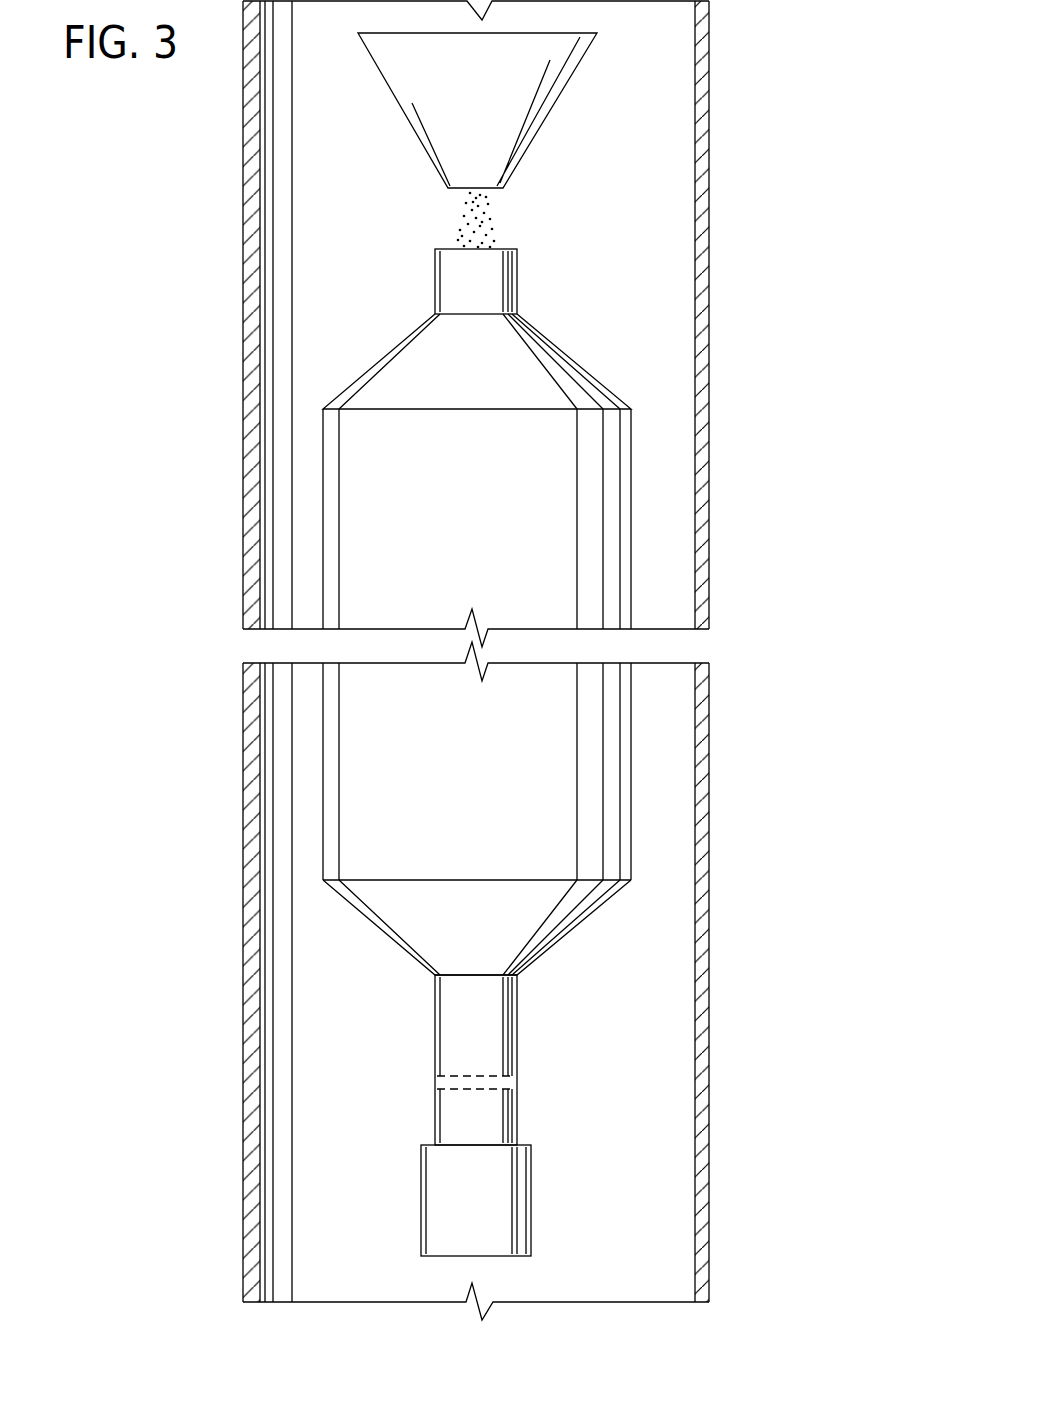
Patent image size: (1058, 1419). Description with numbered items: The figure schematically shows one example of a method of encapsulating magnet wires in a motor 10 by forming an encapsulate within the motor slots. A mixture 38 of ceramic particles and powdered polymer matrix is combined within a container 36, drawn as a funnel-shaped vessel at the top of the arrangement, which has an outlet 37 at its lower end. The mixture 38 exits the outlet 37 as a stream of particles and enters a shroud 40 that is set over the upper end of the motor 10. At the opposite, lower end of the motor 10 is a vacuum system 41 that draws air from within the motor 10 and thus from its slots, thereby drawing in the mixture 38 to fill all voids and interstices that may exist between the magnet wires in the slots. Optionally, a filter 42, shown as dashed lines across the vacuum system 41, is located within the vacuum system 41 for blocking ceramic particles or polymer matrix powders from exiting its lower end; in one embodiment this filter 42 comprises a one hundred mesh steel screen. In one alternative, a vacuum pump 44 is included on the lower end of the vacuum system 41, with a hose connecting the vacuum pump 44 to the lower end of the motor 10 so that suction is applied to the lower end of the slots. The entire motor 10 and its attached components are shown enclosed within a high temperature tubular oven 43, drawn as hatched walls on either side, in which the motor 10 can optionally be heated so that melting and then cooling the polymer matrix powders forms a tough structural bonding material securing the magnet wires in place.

The motor 10 is at (631, 500).
The container 36 is at (557, 100).
The outlet 37 is at (442, 200).
The mixture 38 is at (513, 222).
The shroud 40 is at (582, 329).
The vacuum system 41 is at (418, 1023).
The filter 42 is at (526, 1080).
The high temperature tubular oven 43 is at (709, 807).
The vacuum pump 44 is at (420, 1190).